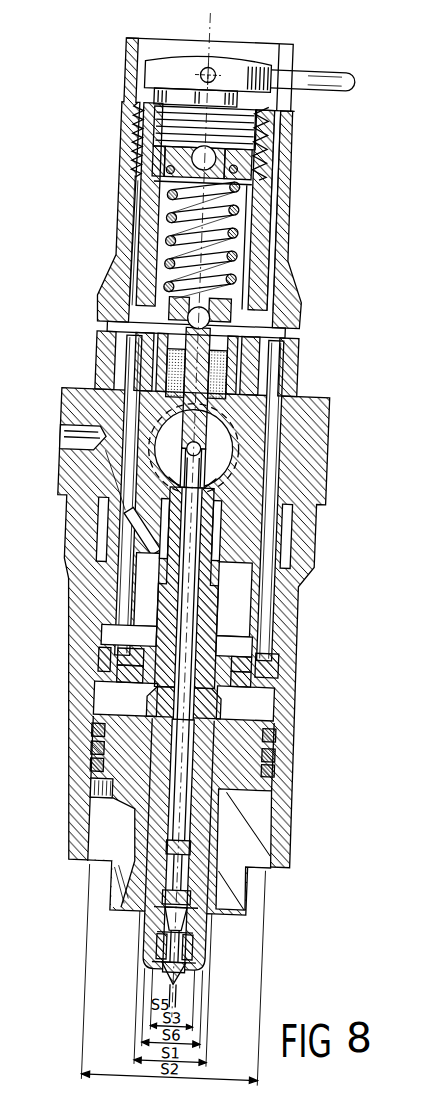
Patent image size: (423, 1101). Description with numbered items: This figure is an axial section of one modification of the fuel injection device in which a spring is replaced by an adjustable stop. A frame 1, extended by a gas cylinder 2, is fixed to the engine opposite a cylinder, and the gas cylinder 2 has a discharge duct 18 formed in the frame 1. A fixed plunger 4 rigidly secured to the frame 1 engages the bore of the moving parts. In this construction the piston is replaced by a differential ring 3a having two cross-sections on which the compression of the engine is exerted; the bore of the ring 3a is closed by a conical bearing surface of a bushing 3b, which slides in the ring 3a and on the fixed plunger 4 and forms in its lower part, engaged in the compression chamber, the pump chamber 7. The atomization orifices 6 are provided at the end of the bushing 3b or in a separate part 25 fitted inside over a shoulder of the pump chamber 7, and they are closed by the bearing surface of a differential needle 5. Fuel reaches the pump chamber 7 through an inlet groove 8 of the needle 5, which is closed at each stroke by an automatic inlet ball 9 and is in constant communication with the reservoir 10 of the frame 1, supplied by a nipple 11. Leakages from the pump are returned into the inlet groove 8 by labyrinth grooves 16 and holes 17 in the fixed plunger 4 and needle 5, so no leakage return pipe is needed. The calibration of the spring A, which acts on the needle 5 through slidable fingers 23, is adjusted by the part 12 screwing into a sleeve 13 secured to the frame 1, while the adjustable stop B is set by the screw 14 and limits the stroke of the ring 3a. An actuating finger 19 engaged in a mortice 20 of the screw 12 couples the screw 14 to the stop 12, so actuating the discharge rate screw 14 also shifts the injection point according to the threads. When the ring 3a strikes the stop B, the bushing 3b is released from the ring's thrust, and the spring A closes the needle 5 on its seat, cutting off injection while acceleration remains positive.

The frame 1 is at (280, 397).
The gas cylinder 2 is at (281, 582).
The differential ring 3a is at (263, 745).
The bushing 3b is at (257, 706).
The fixed plunger 4 is at (200, 525).
The differential needle 5 is at (187, 918).
The atomization orifices 6 is at (172, 970).
The pump chamber 7 is at (187, 902).
The inlet groove 8 is at (173, 783).
The inlet ball 9 is at (202, 870).
The reservoir 10 is at (225, 455).
The nipple 11 is at (235, 472).
The adjusting part 12 is at (283, 146).
The sleeve 13 is at (283, 188).
The discharge rate screw 14 is at (280, 236).
The labyrinth grooves 16 is at (205, 662).
The holes 17 is at (205, 672).
The discharge duct 18 is at (82, 444).
The actuating finger 19 is at (318, 87).
The mortice 20 is at (283, 94).
The slidable fingers 23 is at (283, 426).
The separate part 25 is at (183, 963).
The spring A is at (280, 284).
The adjustable stop B is at (268, 677).